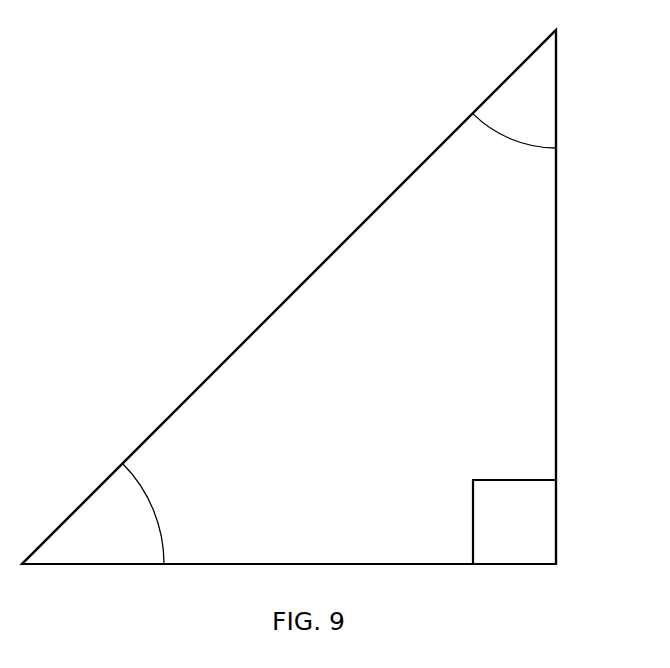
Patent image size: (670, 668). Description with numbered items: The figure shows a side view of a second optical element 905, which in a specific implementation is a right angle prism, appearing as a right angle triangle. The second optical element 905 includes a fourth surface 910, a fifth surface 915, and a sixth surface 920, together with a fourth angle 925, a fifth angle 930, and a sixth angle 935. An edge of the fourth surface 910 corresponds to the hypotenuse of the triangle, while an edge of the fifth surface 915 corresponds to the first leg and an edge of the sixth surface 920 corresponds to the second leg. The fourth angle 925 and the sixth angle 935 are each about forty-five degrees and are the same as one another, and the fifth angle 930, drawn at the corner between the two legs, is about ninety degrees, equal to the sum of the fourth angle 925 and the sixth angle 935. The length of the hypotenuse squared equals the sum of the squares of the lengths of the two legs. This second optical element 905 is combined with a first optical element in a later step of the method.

The second optical element 905 is at (398, 384).
The fourth surface 910 is at (188, 395).
The fifth surface 915 is at (312, 552).
The sixth surface 920 is at (566, 309).
The fourth angle 925 is at (164, 514).
The fifth angle 930 is at (541, 463).
The sixth angle 935 is at (528, 160).